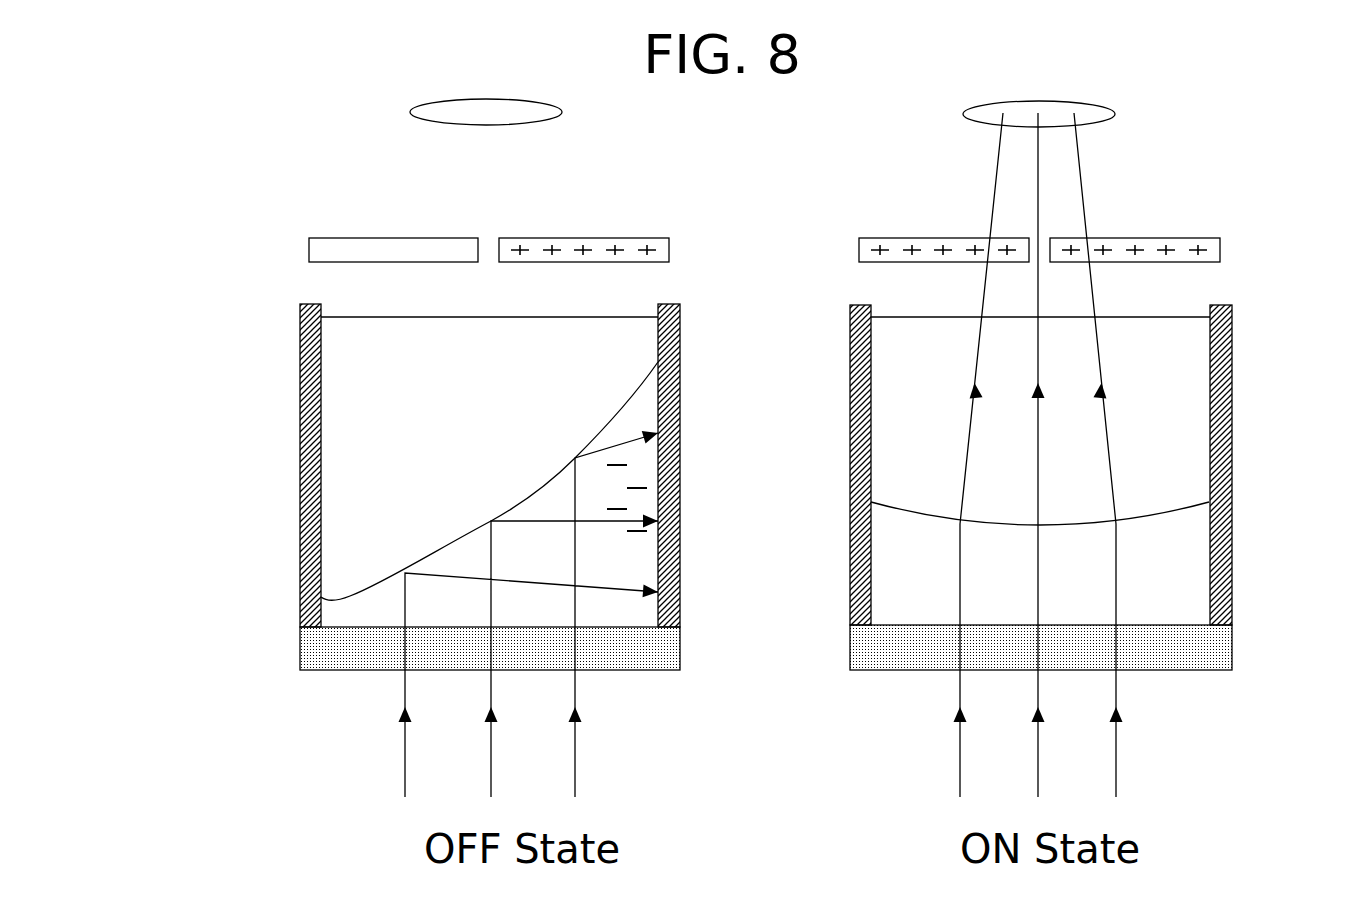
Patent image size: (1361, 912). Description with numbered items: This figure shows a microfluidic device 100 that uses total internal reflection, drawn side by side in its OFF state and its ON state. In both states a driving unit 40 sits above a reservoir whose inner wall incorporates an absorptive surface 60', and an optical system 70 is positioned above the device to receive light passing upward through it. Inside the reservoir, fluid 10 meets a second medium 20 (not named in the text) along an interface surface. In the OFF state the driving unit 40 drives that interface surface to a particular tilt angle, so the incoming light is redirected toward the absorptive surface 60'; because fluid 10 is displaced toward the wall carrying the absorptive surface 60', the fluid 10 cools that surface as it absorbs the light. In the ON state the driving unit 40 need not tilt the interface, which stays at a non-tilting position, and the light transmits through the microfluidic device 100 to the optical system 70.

The optical system 70 is at (739, 114).
The driving unit 40 is at (740, 250).
The microfluidic device 100 is at (764, 487).
The first fluid 20 is at (765, 424).
The fluid 10 is at (765, 481).
The absorptive surface 60' is at (859, 455).